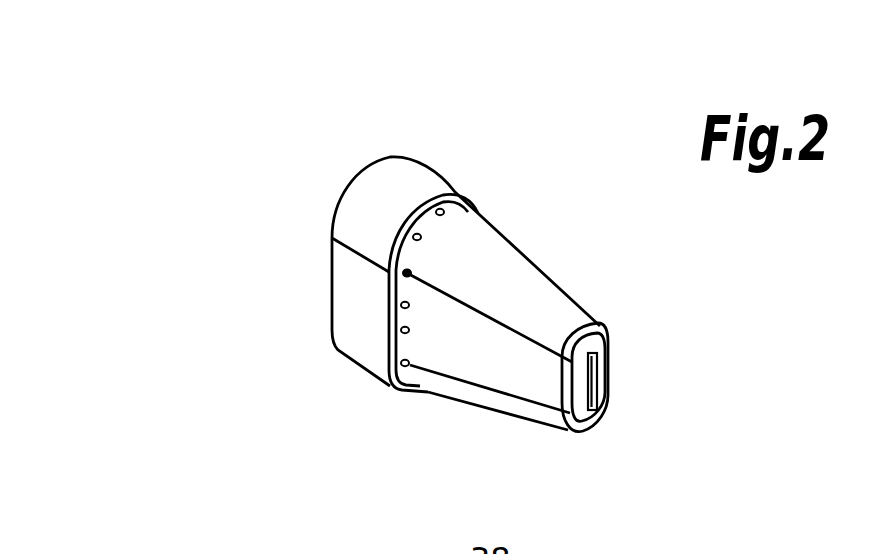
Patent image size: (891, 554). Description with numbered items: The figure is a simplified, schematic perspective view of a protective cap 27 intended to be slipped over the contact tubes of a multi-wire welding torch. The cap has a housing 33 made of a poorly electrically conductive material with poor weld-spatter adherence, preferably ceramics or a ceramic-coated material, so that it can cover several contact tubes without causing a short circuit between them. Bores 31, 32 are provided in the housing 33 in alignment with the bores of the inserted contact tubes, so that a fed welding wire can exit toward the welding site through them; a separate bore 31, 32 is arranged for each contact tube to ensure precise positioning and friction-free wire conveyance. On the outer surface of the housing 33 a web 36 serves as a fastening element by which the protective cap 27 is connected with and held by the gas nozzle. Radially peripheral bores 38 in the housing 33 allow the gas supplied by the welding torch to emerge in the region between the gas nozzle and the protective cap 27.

The protective cap 27 is at (215, 202).
The bore 31 is at (593, 357).
The bore 32 is at (593, 408).
The housing 33 is at (503, 282).
The web 36 is at (392, 312).
The bores 38 is at (443, 208).